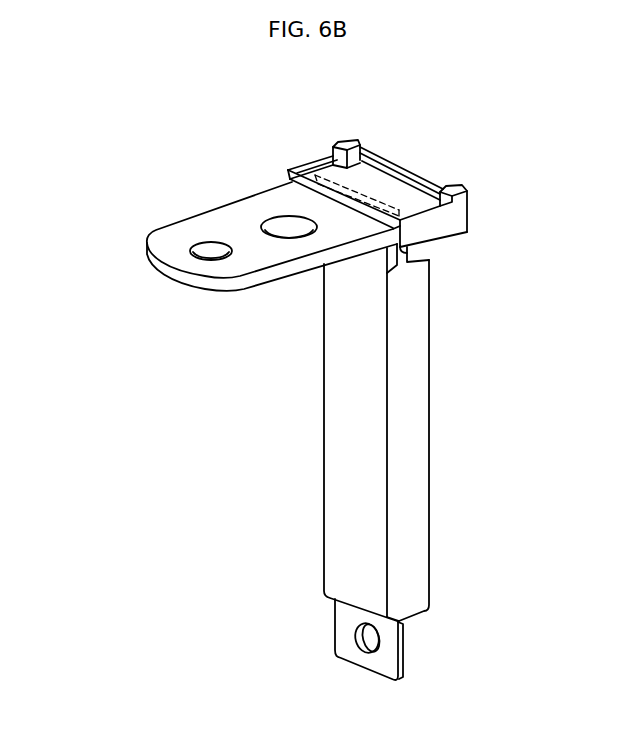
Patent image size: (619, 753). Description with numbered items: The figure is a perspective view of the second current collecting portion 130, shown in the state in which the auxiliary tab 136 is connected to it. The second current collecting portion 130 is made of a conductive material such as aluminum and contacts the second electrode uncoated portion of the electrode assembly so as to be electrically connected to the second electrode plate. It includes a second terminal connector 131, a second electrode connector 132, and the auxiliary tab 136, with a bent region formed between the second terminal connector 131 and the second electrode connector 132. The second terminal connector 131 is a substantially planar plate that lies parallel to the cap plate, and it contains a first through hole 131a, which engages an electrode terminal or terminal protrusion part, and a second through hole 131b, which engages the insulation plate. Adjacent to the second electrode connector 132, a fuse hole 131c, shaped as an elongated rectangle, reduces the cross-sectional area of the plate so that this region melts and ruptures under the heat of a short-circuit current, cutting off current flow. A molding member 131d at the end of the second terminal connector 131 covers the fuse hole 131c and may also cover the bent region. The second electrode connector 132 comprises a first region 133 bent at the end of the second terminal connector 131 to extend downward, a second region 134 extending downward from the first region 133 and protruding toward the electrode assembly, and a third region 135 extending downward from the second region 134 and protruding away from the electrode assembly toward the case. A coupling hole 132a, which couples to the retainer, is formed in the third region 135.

The second current collecting portion 130 is at (56, 117).
The second terminal connector 131 is at (168, 235).
The first through hole 131a is at (283, 221).
The second through hole 131b is at (211, 244).
The fuse hole 131c is at (352, 194).
The molding member 131d is at (462, 210).
The second electrode connector 132 is at (533, 318).
The coupling hole 132a is at (360, 639).
The first region 133 is at (399, 254).
The second region 134 is at (372, 441).
The third region 135 is at (397, 647).
The auxiliary tab 136 is at (395, 526).